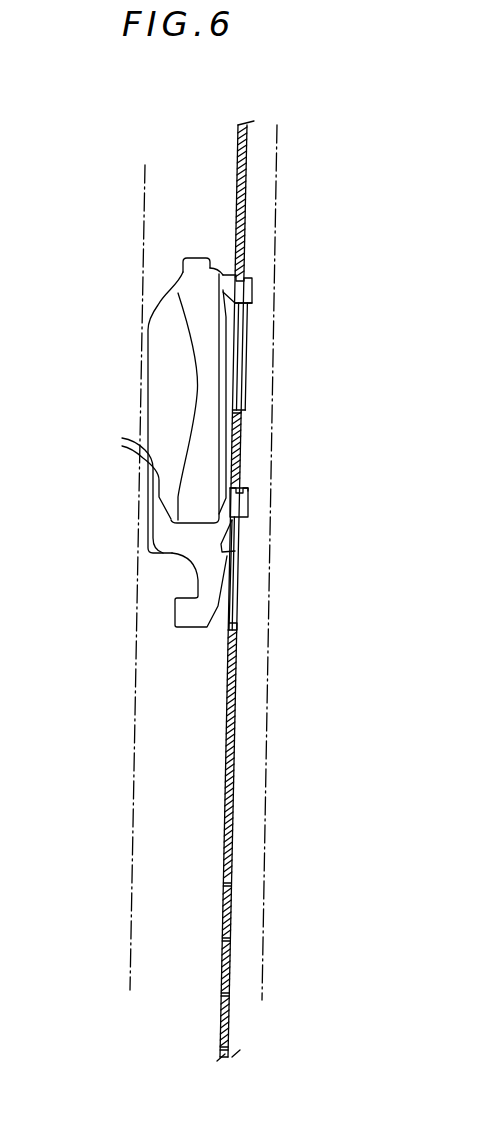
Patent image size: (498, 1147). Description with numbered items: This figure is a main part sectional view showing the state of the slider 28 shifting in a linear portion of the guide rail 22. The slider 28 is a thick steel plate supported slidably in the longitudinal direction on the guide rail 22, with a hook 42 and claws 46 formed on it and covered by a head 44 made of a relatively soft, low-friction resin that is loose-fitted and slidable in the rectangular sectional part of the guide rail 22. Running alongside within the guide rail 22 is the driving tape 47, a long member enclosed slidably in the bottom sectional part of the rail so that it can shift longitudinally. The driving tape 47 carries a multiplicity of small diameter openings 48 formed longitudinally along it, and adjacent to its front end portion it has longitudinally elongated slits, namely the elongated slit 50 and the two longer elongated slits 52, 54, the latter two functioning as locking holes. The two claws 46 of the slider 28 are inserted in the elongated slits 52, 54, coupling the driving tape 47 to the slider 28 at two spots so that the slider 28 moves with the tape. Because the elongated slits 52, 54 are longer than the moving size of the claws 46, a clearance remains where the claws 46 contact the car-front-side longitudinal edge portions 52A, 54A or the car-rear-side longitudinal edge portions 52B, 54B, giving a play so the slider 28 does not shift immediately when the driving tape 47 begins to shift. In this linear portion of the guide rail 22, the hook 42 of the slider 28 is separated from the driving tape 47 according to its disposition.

The guide rail 22 is at (296, 210).
The slider 28 is at (142, 307).
The hook 42 is at (188, 622).
The head 44 is at (197, 262).
The claw 46 is at (249, 299).
The driving tape 47 is at (233, 818).
The small diameter openings 48 is at (233, 889).
The elongated slit 50 is at (236, 708).
The elongated slit 52 is at (238, 583).
The longitudinal edge portion 52A is at (249, 496).
The longitudinal edge portion 52B is at (237, 629).
The elongated slit 54 is at (244, 341).
The longitudinal edge portion 54A is at (248, 290).
The longitudinal edge portion 54B is at (240, 411).